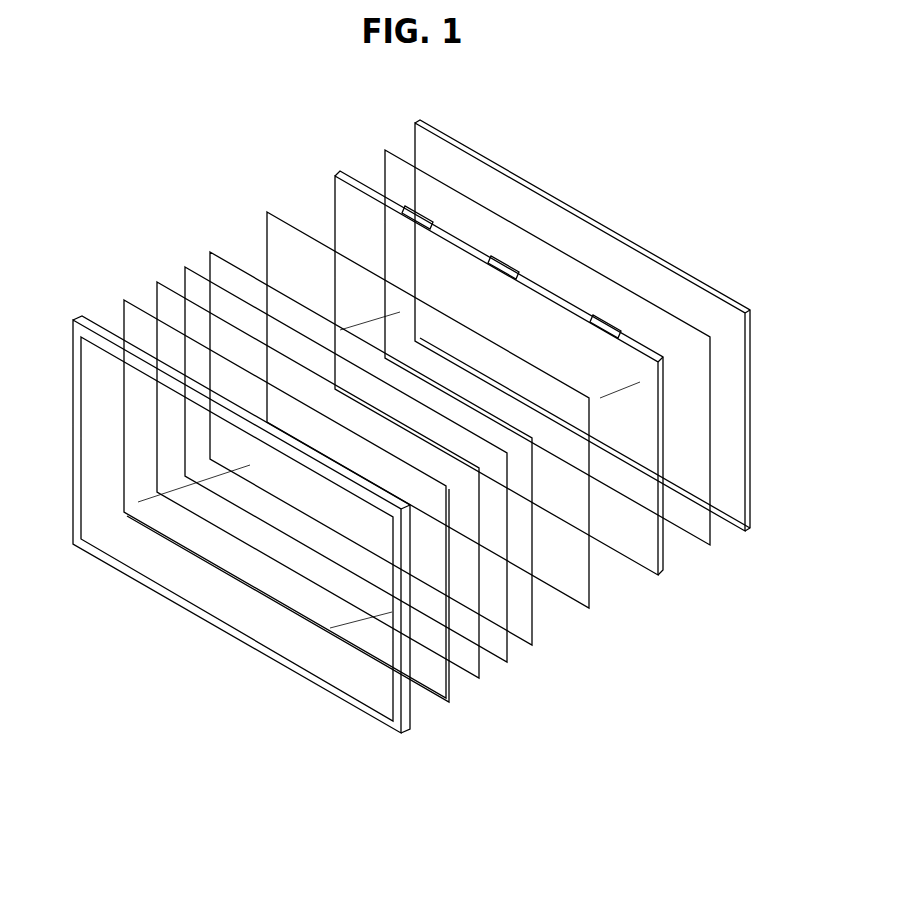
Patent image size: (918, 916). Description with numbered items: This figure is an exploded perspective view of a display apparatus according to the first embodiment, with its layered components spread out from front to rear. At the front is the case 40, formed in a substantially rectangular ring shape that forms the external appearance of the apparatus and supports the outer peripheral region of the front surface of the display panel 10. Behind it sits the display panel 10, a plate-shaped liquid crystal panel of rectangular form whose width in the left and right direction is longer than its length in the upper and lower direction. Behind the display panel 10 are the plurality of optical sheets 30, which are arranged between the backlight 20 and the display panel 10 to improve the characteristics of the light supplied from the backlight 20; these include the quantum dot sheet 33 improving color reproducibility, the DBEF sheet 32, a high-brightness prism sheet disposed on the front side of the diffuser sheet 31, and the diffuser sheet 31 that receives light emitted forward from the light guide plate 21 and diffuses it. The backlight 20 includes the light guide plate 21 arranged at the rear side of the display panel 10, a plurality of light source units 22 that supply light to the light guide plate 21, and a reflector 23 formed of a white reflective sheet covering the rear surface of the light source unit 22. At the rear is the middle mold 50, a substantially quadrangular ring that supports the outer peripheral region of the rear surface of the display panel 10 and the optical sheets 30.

The display panel 10 is at (452, 707).
The backlight 20 is at (542, 395).
The light guide plate 21 is at (663, 547).
The light source units 22 is at (427, 203).
The reflector 23 is at (708, 535).
The optical sheets 30 is at (365, 504).
The diffuser sheet 31 is at (388, 472).
The DBEF sheet 32 is at (498, 655).
The quantum dot sheet 33 is at (473, 670).
The case 40 is at (391, 727).
The middle mold 50 is at (607, 235).